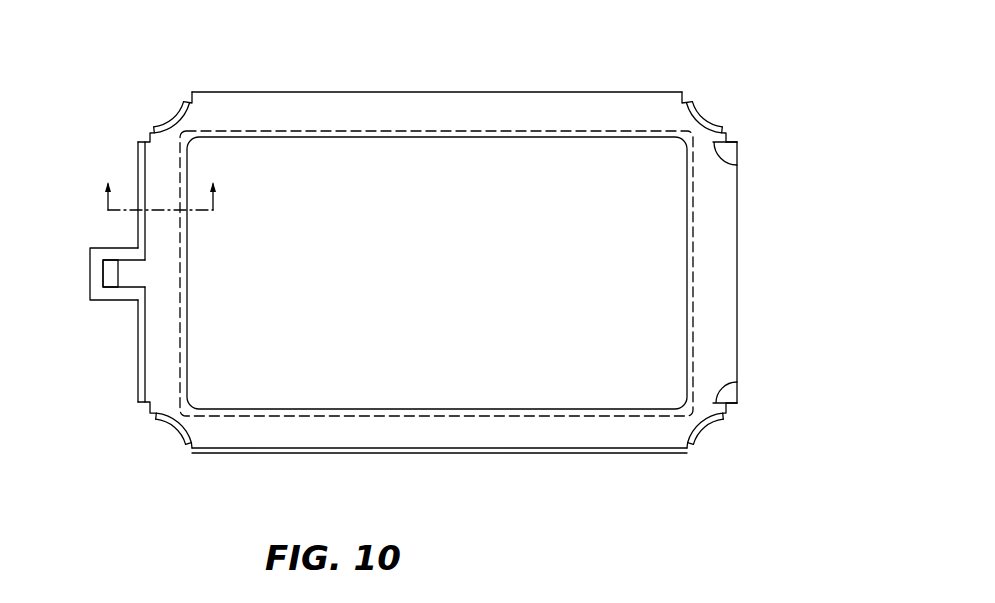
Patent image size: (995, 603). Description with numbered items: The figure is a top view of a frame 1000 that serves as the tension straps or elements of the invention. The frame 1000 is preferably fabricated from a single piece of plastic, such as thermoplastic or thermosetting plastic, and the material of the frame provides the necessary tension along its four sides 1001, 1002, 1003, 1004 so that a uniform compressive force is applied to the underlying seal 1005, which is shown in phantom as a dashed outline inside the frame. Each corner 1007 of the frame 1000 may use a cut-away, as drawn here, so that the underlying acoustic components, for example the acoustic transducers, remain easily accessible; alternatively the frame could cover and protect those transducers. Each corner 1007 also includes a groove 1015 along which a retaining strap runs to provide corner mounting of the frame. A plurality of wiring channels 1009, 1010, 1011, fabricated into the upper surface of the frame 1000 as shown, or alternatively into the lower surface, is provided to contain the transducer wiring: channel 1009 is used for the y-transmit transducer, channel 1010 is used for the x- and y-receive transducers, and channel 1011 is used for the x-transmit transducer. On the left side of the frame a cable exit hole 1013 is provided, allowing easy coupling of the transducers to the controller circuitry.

The frame 1000 is at (546, 58).
The side 1001 is at (373, 105).
The side 1002 is at (718, 258).
The side 1003 is at (520, 435).
The side 1004 is at (155, 375).
The seal 1005 is at (362, 414).
The corner 1007 is at (152, 106).
The wiring channel 1009 is at (432, 449).
The wiring channel 1010 is at (140, 333).
The wiring channel 1011 is at (145, 232).
The cable exit hole 1013 is at (112, 274).
The groove 1015 is at (727, 167).